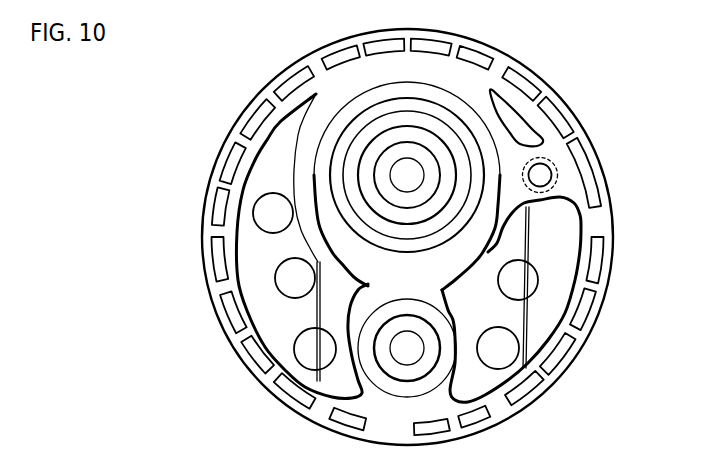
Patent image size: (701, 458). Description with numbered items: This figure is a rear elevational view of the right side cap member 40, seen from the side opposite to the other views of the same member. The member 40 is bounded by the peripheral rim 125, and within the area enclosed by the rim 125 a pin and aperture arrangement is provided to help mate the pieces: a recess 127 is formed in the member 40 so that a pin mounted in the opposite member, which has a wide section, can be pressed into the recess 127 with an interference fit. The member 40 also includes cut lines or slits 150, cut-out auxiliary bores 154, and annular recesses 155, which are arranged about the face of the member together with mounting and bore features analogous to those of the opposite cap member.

The right member 40 is at (479, 41).
The peripheral rim 125 is at (616, 255).
The recess 127 is at (553, 160).
The cut line or slit 150 is at (385, 441).
The cut-out auxiliary bore 154 is at (283, 199).
The annular recess 155 is at (290, 83).